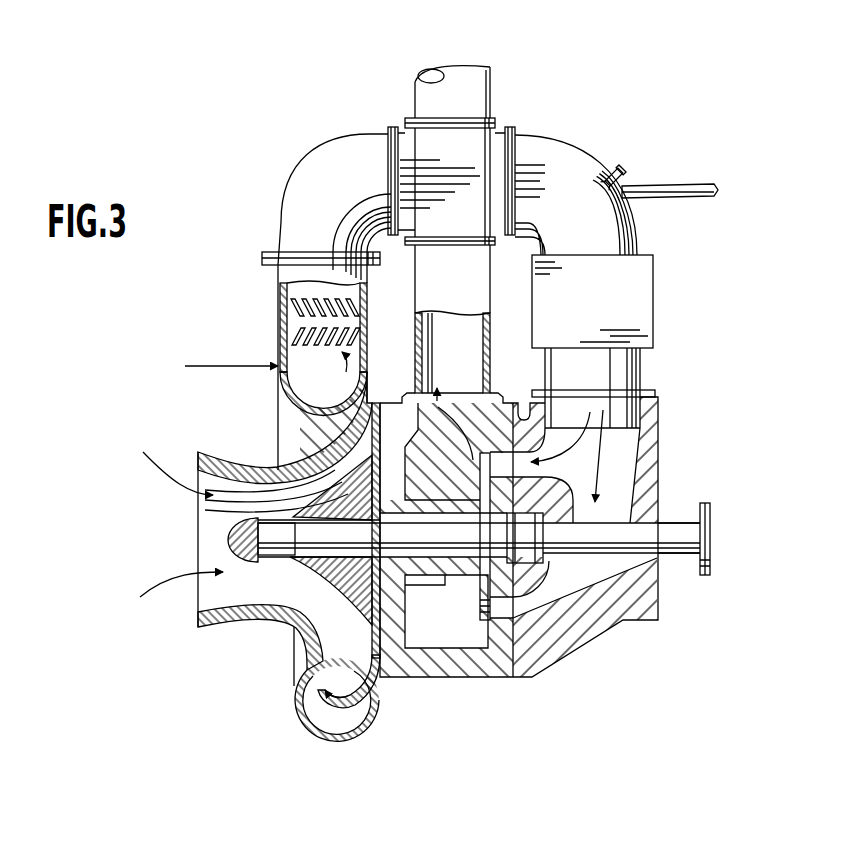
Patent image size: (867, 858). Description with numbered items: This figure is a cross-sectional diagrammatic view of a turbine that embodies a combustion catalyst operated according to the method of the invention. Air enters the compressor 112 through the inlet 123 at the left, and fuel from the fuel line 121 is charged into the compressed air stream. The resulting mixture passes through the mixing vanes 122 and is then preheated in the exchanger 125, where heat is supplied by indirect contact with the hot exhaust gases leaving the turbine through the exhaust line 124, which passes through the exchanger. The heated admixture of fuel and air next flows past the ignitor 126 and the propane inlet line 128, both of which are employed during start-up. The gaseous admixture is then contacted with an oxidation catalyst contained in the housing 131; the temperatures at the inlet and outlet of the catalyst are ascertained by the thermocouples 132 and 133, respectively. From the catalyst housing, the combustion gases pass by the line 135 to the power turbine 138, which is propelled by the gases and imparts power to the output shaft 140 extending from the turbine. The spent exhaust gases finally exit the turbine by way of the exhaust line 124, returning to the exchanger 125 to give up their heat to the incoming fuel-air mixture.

The compressor 112 is at (313, 576).
The fuel line 121 is at (243, 368).
The mixing vanes 122 is at (280, 303).
The inlet 123 is at (208, 527).
The exhaust line 124 is at (488, 89).
The exchanger 125 is at (478, 157).
The ignitor 126 is at (631, 150).
The propane inlet line 128 is at (701, 186).
The housing 131 is at (643, 292).
The thermocouple 132 is at (613, 253).
The thermocouple 133 is at (599, 351).
The line 135 is at (627, 450).
The power turbine 138 is at (480, 614).
The output shaft 140 is at (683, 519).